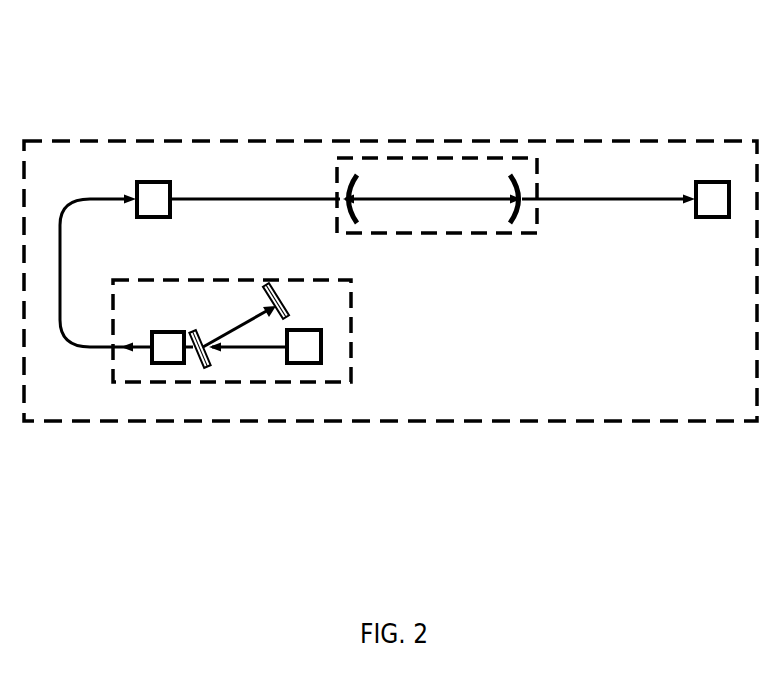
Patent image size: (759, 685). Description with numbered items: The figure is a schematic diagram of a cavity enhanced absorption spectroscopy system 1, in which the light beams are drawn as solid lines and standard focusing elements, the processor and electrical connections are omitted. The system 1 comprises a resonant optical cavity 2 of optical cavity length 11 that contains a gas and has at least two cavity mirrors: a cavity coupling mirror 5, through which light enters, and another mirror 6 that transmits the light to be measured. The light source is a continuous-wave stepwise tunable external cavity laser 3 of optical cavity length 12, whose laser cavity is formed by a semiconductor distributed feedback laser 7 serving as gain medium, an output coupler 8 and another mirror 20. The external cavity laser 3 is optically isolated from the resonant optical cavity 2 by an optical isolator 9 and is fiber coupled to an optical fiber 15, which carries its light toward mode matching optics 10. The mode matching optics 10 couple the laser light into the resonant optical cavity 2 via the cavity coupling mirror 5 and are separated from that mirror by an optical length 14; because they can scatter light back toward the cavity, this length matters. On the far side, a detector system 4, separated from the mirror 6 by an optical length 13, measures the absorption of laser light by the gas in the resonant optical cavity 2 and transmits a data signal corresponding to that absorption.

The system 1 is at (639, 385).
The resonant optical cavity 2 is at (442, 158).
The continuous-wave stepwise tunable external cavity laser 3 is at (285, 385).
The detector system 4 is at (708, 176).
The cavity coupling mirror 5 is at (352, 165).
The mirror 6 is at (512, 168).
The semiconductor distributed feedback laser 7 is at (320, 370).
The output coupler 8 is at (198, 378).
The optical isolator 9 is at (170, 368).
The mode matching optics 10 is at (152, 176).
The optical cavity length 11 is at (408, 192).
The optical cavity length 12 is at (235, 338).
The optical length 13 is at (615, 190).
The optical length 14 is at (212, 195).
The optical fiber 15 is at (87, 355).
The mirror 20 is at (290, 298).